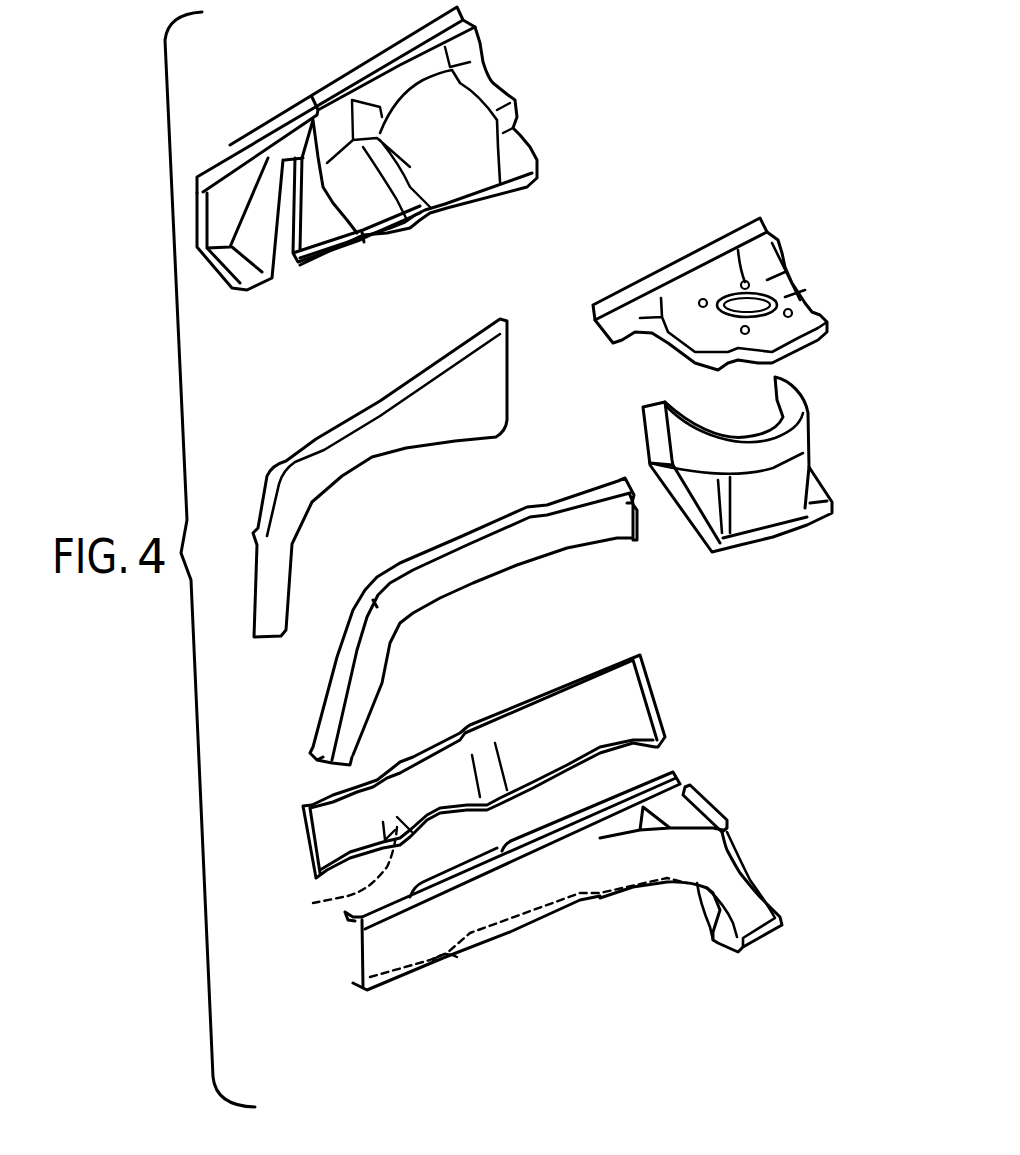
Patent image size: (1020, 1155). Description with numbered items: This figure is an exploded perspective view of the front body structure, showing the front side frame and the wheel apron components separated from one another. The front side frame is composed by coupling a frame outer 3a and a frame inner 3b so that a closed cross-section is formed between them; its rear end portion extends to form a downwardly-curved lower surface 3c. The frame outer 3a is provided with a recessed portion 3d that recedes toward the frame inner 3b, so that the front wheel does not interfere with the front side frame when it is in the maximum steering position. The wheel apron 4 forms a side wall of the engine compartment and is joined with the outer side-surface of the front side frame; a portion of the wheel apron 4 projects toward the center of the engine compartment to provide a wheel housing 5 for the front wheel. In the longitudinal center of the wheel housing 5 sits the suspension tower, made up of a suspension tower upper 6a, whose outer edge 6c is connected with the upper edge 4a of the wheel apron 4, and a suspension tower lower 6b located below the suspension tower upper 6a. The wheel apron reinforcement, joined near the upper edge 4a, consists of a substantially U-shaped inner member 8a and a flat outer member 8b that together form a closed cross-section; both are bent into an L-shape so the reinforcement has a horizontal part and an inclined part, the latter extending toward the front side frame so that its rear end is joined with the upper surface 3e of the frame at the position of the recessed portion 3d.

The wheel apron 4 is at (468, 43).
The upper edge of the wheel apron 4a is at (327, 84).
The wheel housing 5 is at (377, 193).
The suspension tower upper 6a is at (785, 258).
The suspension tower lower 6b is at (820, 480).
The outer edge of the suspension tower upper 6c is at (710, 245).
The inner member 8a is at (331, 681).
The outer member 8b is at (324, 431).
The frame outer 3a is at (306, 830).
The frame inner 3b is at (345, 960).
The downwardly-curved lower surface 3c is at (572, 884).
The recessed portion 3d is at (334, 882).
The upper surface of the front side frame 3e is at (345, 917).